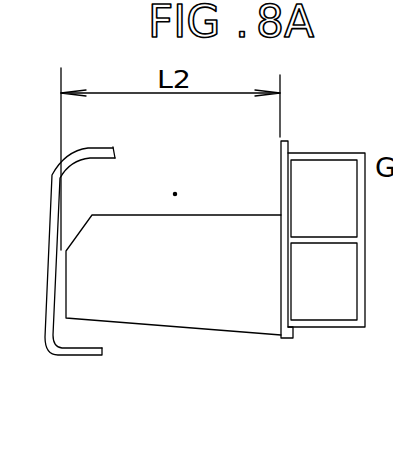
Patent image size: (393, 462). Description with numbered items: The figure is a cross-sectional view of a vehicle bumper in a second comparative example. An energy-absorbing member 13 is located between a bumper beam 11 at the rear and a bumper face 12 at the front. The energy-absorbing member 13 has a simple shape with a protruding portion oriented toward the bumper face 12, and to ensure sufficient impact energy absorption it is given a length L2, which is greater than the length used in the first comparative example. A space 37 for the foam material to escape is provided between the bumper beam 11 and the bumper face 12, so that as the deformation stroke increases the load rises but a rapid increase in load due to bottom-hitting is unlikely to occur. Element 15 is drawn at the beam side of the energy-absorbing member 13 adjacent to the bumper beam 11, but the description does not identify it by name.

The bumper beam 11 is at (315, 328).
The bumper face 12 is at (60, 358).
The energy-absorbing member 13 is at (180, 330).
The end plate 15 is at (279, 187).
The space 37 is at (175, 191).